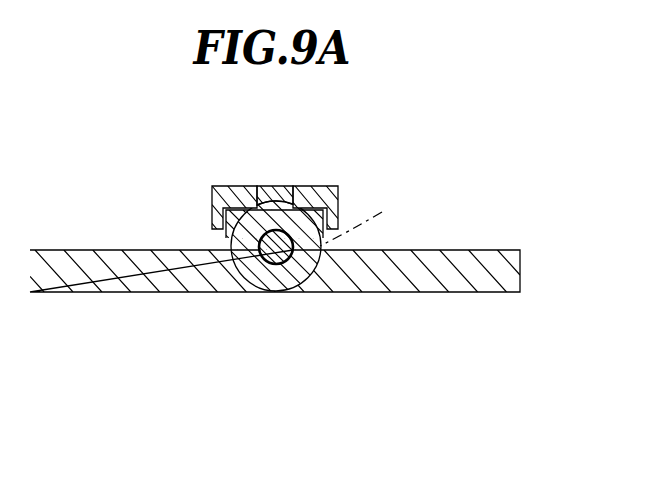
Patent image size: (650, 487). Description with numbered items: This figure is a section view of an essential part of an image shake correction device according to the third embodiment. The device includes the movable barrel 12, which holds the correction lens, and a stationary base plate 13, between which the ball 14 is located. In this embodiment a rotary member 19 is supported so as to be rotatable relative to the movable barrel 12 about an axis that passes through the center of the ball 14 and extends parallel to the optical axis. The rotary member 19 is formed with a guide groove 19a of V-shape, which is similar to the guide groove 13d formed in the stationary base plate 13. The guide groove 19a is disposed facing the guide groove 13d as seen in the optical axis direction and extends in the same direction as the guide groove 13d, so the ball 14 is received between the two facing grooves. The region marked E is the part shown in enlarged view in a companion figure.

The movable barrel 12 is at (325, 193).
The stationary base plate 13 is at (487, 257).
The guide groove 13d is at (278, 263).
The ball 14 is at (256, 206).
The rotary member 19 is at (275, 203).
The guide groove 19a is at (232, 236).
The E part E is at (360, 224).